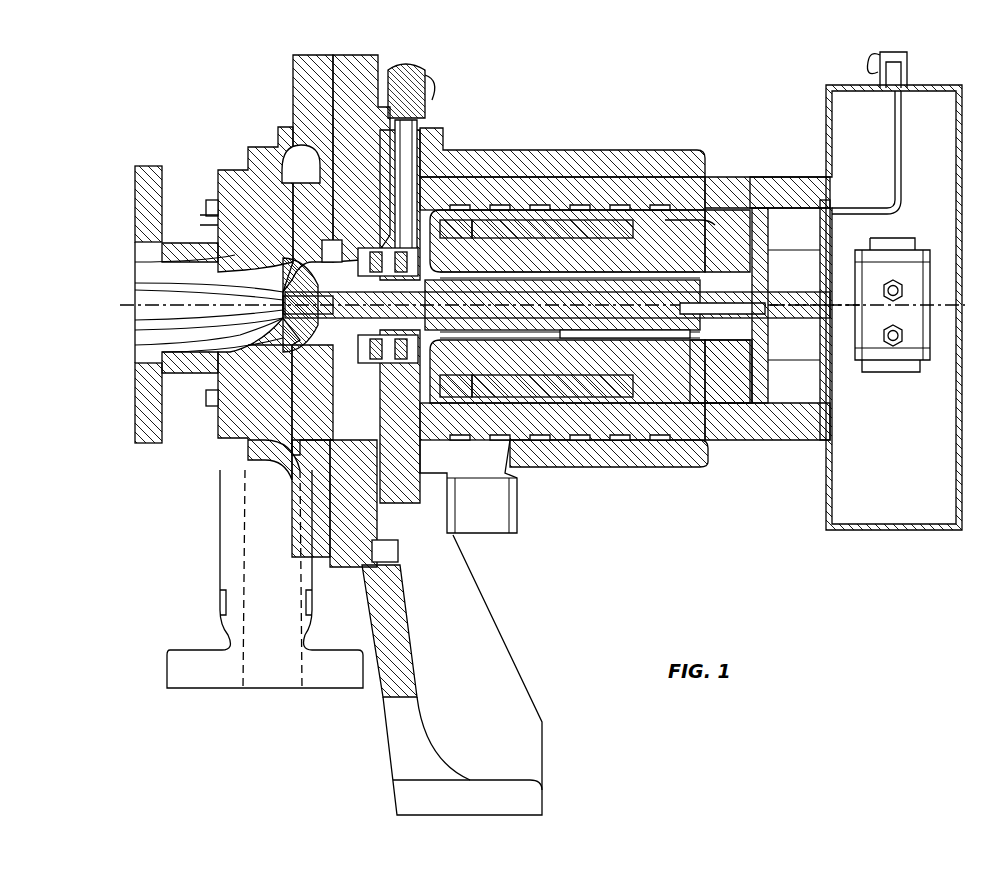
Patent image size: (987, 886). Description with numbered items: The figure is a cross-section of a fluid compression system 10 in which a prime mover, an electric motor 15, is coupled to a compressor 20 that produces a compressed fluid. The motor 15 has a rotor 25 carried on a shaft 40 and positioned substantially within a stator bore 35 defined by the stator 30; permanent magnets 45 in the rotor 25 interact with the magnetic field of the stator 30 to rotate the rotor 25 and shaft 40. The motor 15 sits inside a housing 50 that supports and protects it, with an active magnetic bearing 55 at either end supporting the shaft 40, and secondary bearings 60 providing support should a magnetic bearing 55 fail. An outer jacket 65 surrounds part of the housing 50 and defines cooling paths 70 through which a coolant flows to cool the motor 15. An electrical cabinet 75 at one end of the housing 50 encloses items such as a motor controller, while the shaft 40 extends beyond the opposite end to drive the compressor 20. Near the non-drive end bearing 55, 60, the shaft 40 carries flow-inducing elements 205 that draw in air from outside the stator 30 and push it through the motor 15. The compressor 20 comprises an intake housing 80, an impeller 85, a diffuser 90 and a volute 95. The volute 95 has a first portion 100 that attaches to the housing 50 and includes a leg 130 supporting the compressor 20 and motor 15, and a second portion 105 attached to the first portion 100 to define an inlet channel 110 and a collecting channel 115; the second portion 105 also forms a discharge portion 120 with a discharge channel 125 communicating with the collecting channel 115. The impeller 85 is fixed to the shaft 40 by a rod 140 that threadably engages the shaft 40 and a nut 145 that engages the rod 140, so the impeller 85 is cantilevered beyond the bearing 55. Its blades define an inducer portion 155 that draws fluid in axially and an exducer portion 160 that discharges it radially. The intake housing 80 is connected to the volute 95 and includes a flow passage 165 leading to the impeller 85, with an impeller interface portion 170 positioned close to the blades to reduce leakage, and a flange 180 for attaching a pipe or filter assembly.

The fluid compression system 10 is at (738, 560).
The motor 15 is at (730, 125).
The compressor 20 is at (163, 462).
The rotor 25 is at (660, 338).
The stator 30 is at (660, 222).
The stator bore 35 is at (472, 248).
The shaft 40 is at (655, 292).
The permanent magnets 45 is at (612, 288).
The housing 50 is at (732, 432).
The bearing 55 is at (408, 250).
The secondary bearings 60 is at (378, 255).
The outer jacket 65 is at (577, 153).
The cooling paths 70 is at (505, 183).
The electrical cabinet 75 is at (925, 90).
The intake housing 80 is at (215, 430).
The impeller 85 is at (300, 315).
The diffuser 90 is at (315, 222).
The volute 95 is at (338, 42).
The first portion 100 is at (408, 68).
The second portion 105 is at (298, 64).
The inlet channel 110 is at (258, 463).
The collecting channel 115 is at (300, 160).
The discharge portion 120 is at (235, 598).
The discharge channel 125 is at (262, 665).
The leg 130 is at (530, 792).
The rod 140 is at (423, 312).
The nut 145 is at (295, 300).
The inducer portion 155 is at (285, 338).
The exducer portion 160 is at (330, 250).
The flow passage 165 is at (195, 262).
The impeller interface portion 170 is at (290, 365).
The flange 180 is at (140, 200).
The flow-inducing elements 205 is at (690, 350).